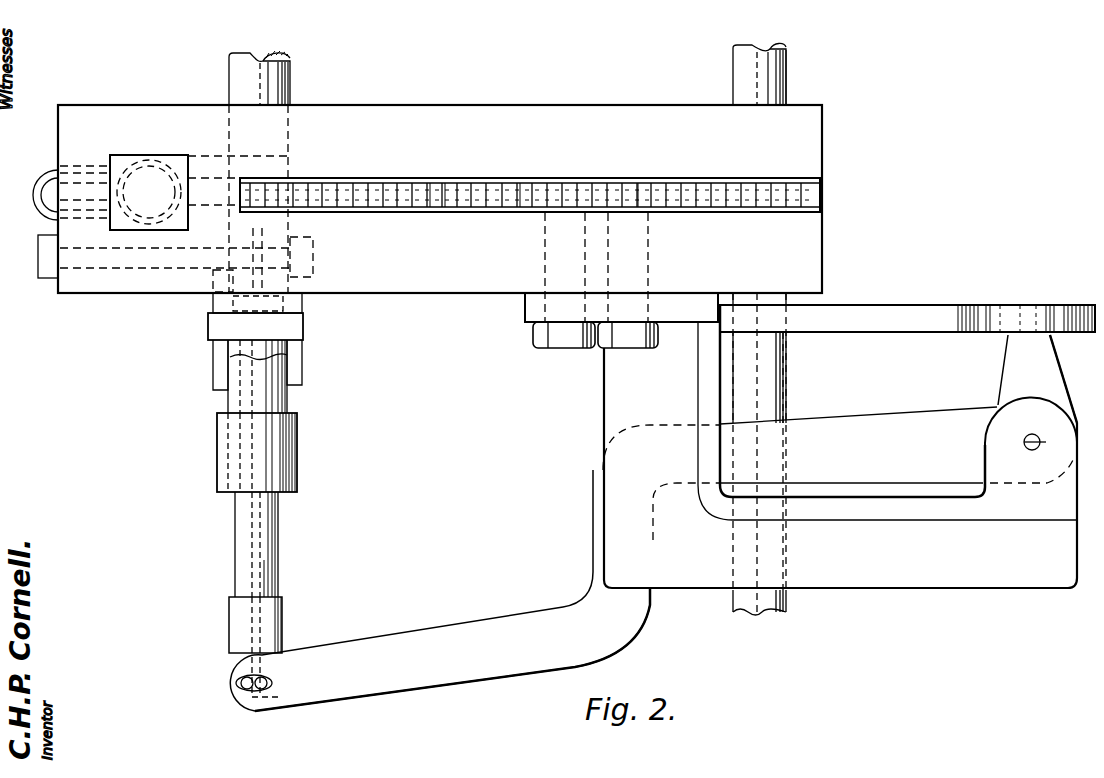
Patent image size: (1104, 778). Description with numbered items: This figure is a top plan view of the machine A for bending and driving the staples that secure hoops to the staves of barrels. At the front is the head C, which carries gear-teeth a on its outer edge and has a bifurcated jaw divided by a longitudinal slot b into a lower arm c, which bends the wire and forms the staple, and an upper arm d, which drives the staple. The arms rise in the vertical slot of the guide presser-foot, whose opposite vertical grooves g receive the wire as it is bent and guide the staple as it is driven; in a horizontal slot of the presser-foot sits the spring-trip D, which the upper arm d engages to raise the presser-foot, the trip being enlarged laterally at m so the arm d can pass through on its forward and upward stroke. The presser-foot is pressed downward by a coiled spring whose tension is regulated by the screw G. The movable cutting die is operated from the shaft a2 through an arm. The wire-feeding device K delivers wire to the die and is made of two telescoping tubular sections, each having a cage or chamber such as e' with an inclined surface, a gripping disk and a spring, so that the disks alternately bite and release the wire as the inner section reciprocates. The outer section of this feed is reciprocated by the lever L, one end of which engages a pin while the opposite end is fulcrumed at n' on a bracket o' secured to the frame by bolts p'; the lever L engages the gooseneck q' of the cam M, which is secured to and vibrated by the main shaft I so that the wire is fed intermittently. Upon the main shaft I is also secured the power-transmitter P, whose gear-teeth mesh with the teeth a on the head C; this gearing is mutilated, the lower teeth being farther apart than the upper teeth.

The staple bending and driving machine A is at (440, 199).
The spring-trip D is at (40, 211).
The screw G is at (149, 192).
The shaft a2 is at (268, 83).
The main shaft I is at (783, 82).
The power-transmitter P is at (822, 205).
The head C is at (430, 179).
The vertical grooves g is at (519, 190).
The upper arm d is at (646, 173).
The bolts p' is at (595, 350).
The cam M is at (896, 412).
The gooseneck q' is at (1025, 306).
The boss r is at (1031, 404).
The fulcrum n' is at (1031, 457).
The bracket o' is at (840, 468).
The lever L is at (447, 672).
The wire-feeding device K is at (205, 466).
The gear-teeth a is at (290, 400).
The lower arm c is at (270, 538).
The longitudinal slot b is at (282, 578).
The cage or chamber e' is at (268, 647).
The laterally enlarged part of trip m is at (256, 690).